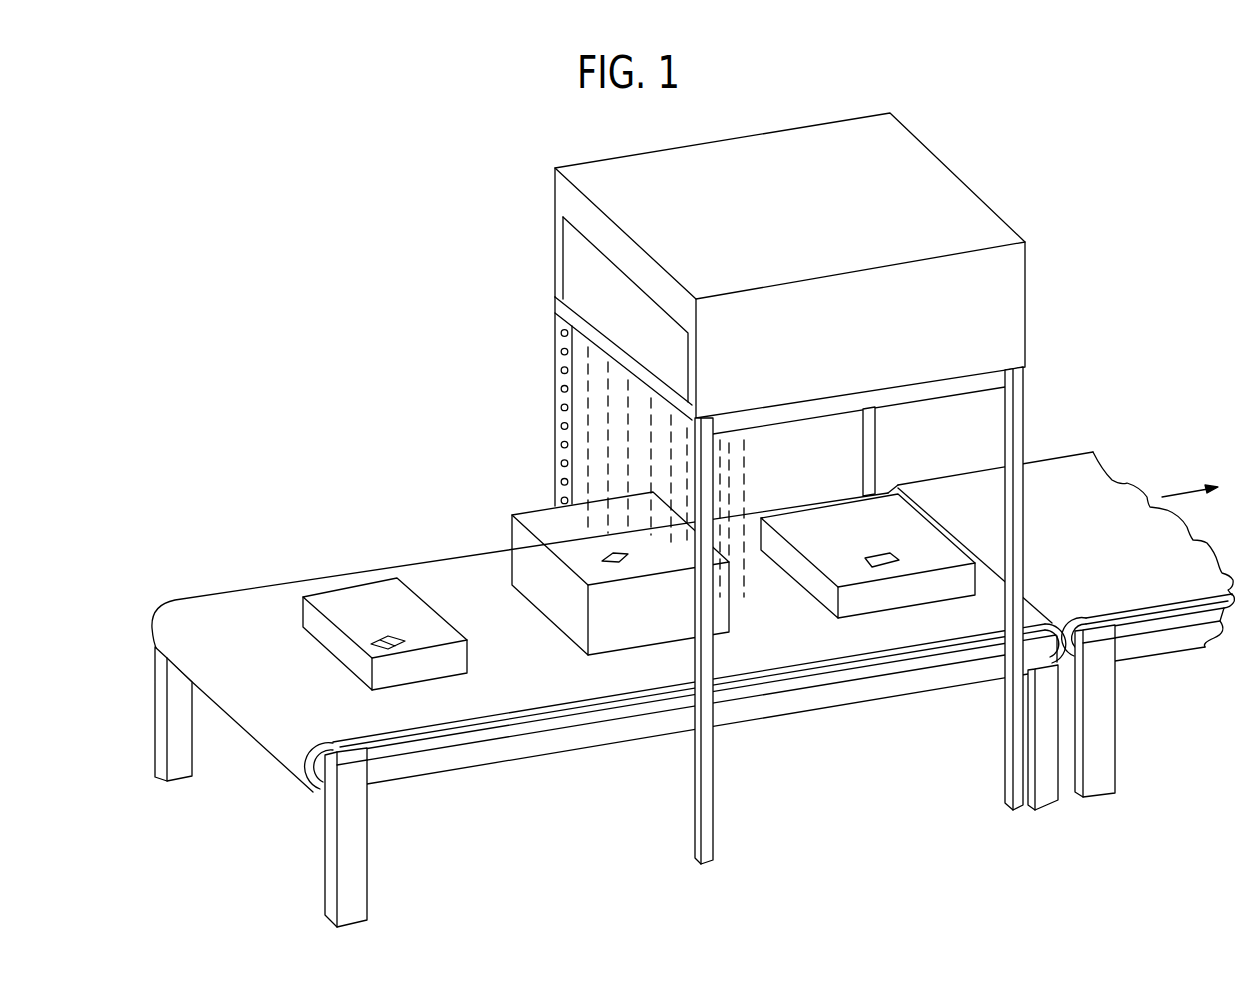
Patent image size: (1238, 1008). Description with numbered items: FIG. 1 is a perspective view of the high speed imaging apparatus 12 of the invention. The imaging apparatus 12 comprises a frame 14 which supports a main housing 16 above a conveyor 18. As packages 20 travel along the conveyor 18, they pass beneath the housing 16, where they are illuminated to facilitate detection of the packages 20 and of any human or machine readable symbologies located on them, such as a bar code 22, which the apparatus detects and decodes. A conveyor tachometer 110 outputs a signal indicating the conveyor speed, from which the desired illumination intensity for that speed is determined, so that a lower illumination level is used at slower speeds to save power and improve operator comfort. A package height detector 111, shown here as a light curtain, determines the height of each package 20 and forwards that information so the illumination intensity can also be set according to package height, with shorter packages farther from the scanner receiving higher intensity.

The high speed imaging apparatus 12 is at (448, 158).
The frame 14 is at (557, 338).
The main housing 16 is at (900, 103).
The conveyor 18 is at (247, 595).
The packages 20 is at (550, 535).
The bar code 22 is at (603, 560).
The conveyor tachometer 110 is at (1035, 667).
The package height detector 111 is at (557, 418).